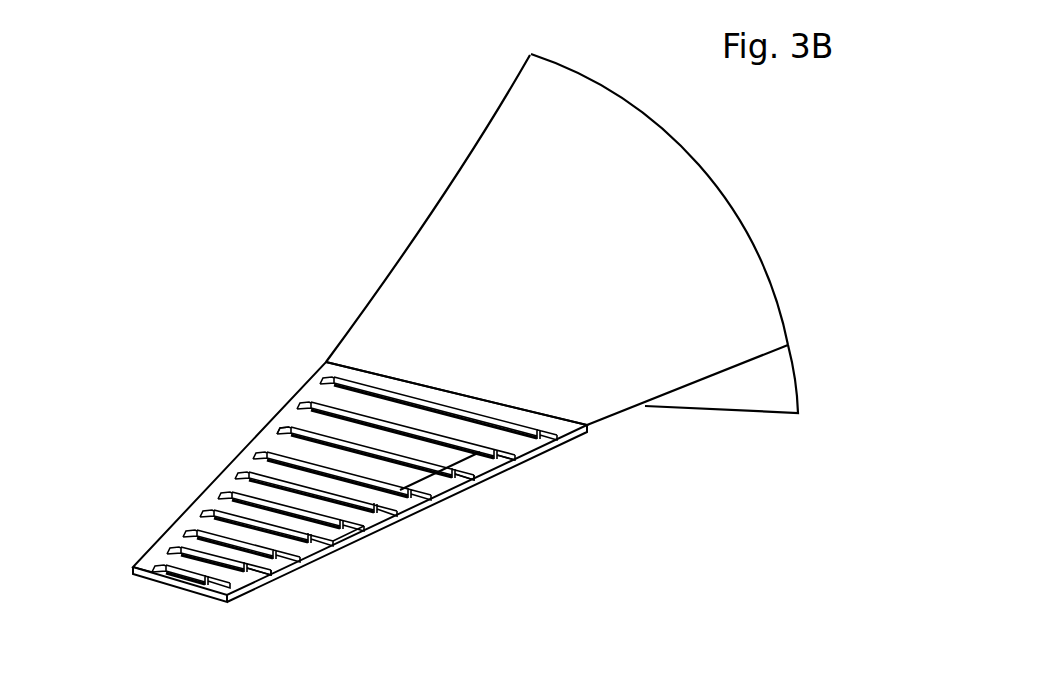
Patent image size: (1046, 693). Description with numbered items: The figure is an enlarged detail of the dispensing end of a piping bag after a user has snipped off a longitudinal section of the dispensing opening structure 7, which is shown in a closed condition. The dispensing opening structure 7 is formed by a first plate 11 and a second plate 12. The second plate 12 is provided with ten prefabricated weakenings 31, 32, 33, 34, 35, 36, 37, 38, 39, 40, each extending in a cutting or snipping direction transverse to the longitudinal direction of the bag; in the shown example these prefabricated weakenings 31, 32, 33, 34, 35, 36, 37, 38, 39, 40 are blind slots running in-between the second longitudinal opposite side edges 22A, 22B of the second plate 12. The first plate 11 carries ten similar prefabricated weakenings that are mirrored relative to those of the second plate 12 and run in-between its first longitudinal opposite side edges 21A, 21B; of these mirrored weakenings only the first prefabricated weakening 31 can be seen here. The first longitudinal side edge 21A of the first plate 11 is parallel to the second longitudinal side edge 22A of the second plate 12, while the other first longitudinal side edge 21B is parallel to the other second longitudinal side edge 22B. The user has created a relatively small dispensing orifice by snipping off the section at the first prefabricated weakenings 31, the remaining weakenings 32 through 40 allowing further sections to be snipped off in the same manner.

The dispensing opening structure 7 is at (782, 200).
The first plate 11 is at (415, 522).
The second plate 12 is at (433, 425).
The first longitudinal side edge 21A is at (273, 575).
The first longitudinal side edge 21B is at (135, 572).
The second longitudinal side edge 22A is at (353, 543).
The second longitudinal side edge 22B is at (288, 412).
The first prefabricated weakening 31 is at (166, 565).
The prefabricated weakening 32 is at (181, 547).
The prefabricated weakening 33 is at (197, 530).
The prefabricated weakening 34 is at (214, 510).
The second prefabricated weakening 35 is at (232, 492).
The prefabricated weakening 36 is at (249, 472).
The prefabricated weakening 37 is at (267, 452).
The prefabricated weakening 38 is at (291, 427).
The prefabricated weakening 39 is at (311, 402).
The prefabricated weakening 40 is at (334, 377).